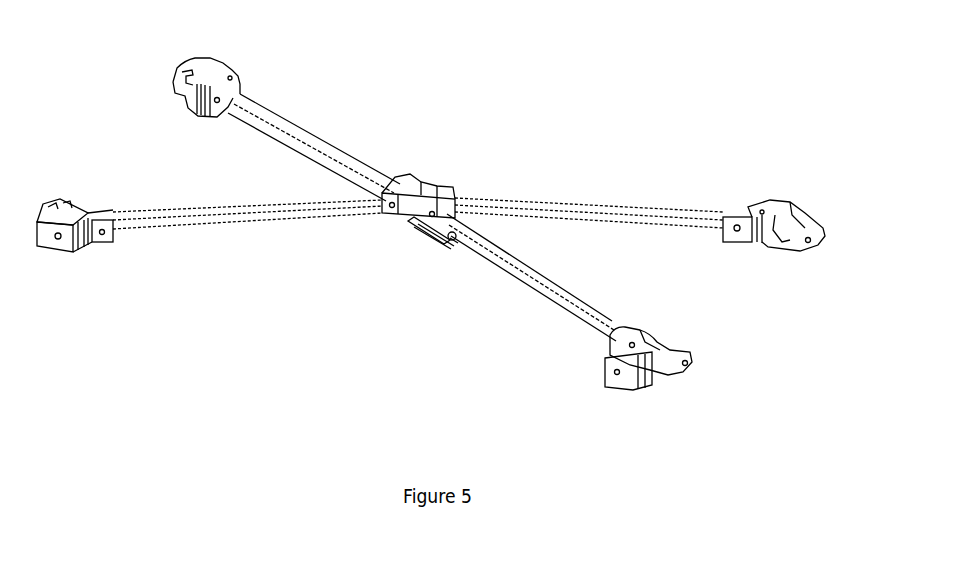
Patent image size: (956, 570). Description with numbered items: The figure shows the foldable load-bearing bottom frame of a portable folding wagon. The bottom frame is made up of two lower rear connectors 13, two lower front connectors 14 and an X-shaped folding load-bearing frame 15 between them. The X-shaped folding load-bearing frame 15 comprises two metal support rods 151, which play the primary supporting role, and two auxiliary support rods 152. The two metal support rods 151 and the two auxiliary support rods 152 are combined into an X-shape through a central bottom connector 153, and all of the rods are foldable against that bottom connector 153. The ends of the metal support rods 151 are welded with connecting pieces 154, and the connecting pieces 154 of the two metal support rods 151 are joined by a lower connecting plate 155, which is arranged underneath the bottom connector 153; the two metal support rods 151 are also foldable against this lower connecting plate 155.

The lower rear connector 13 is at (222, 68).
The lower front connector 14 is at (663, 349).
The X-shaped folding load-bearing frame 15 is at (497, 128).
The metal support rod 151 is at (521, 293).
The auxiliary support rod 152 is at (571, 196).
The bottom connector 153 is at (384, 214).
The connecting piece 154 is at (454, 250).
The lower connecting plate 155 is at (410, 247).